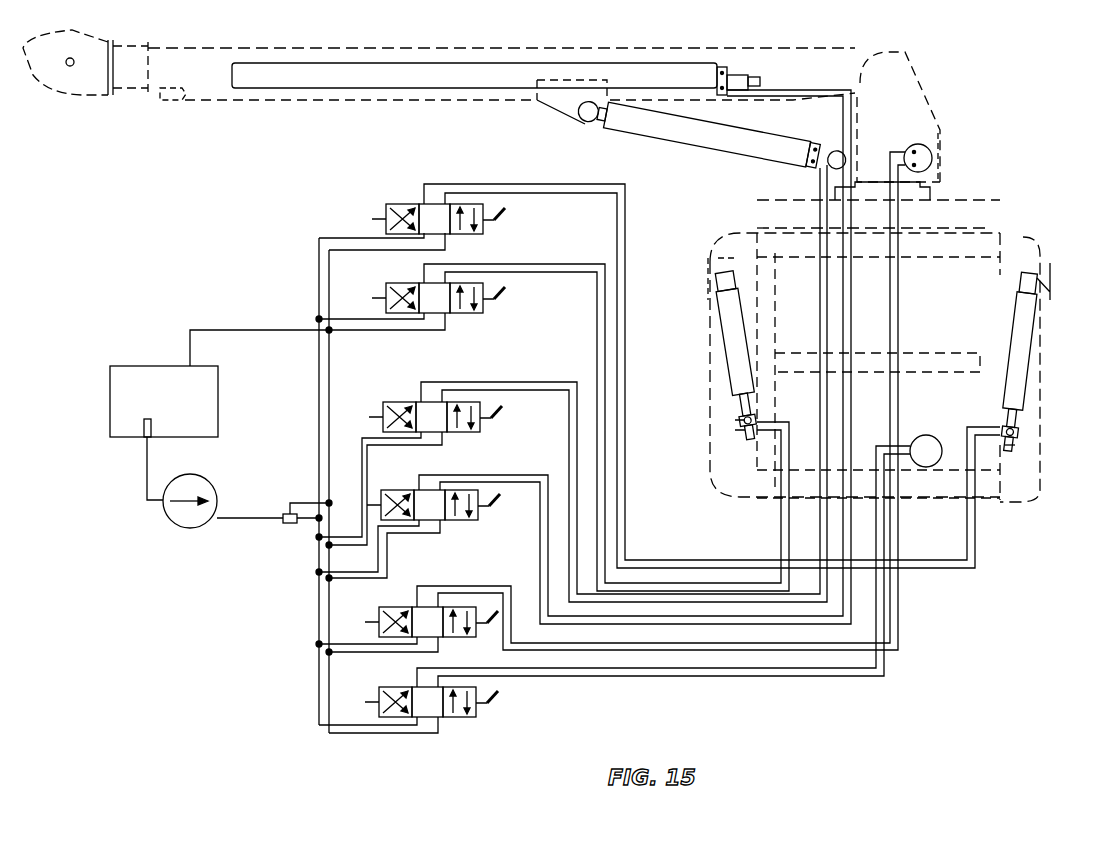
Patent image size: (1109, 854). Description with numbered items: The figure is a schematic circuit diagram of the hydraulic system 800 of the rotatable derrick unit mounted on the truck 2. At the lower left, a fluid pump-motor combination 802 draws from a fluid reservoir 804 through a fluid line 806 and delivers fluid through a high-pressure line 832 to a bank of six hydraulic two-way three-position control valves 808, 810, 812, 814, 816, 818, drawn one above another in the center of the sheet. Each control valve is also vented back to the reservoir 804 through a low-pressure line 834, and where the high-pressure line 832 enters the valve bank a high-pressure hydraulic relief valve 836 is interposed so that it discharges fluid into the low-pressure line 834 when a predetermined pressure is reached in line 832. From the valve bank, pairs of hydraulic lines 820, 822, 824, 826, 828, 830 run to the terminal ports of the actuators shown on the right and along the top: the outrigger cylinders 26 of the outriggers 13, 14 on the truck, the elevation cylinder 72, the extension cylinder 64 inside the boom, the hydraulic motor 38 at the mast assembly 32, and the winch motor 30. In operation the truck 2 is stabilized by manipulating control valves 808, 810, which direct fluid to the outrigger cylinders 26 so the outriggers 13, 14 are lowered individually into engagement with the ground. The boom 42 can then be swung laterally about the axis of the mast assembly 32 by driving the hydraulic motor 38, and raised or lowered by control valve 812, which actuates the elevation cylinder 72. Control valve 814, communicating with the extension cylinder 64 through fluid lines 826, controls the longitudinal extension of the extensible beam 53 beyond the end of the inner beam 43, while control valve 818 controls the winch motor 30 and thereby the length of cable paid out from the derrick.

The truck 2 is at (1023, 237).
The outrigger 13 is at (1040, 434).
The outrigger 14 is at (715, 425).
The outrigger cylinders 26 is at (722, 357).
The winch motor 30 is at (930, 436).
The mast assembly 32 is at (940, 175).
The hydraulic motor 38 is at (933, 150).
The boom 42 is at (232, 97).
The inner beam 43 is at (452, 48).
The extensible beam 53 is at (133, 96).
The extension cylinder 64 is at (444, 98).
The elevation cylinder 72 is at (720, 155).
The hydraulic system 800 is at (185, 243).
The fluid pump-motor combination 802 is at (175, 527).
The fluid reservoir 804 is at (110, 400).
The fluid line 806 is at (147, 465).
The control valve 808 is at (485, 232).
The control valve 810 is at (483, 311).
The control valve 812 is at (480, 430).
The control valve 814 is at (480, 517).
The control valve 816 is at (465, 640).
The control valve 818 is at (465, 722).
The hydraulic lines 820 is at (627, 262).
The hydraulic lines 822 is at (597, 340).
The hydraulic lines 824 is at (570, 448).
The hydraulic lines 826 is at (540, 556).
The hydraulic lines 828 is at (513, 628).
The hydraulic lines 830 is at (565, 675).
The high-pressure line 832 is at (318, 266).
The low-pressure line 834 is at (236, 326).
The high-pressure hydraulic relief valve 836 is at (290, 526).